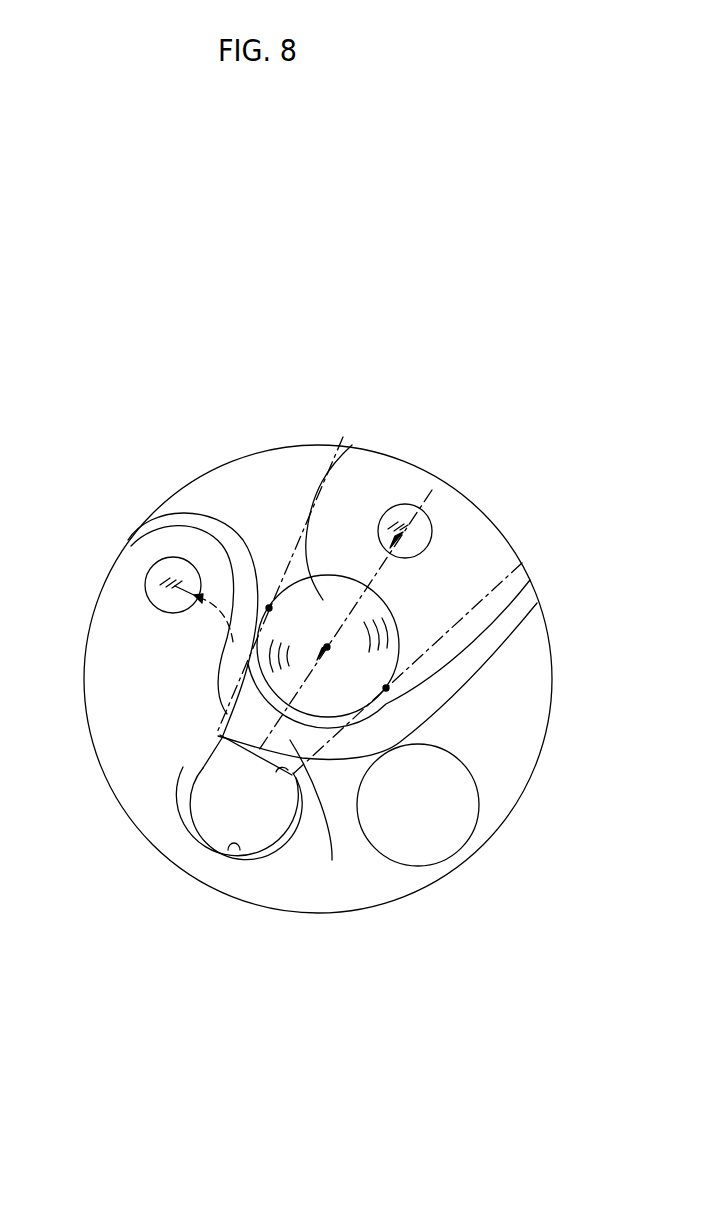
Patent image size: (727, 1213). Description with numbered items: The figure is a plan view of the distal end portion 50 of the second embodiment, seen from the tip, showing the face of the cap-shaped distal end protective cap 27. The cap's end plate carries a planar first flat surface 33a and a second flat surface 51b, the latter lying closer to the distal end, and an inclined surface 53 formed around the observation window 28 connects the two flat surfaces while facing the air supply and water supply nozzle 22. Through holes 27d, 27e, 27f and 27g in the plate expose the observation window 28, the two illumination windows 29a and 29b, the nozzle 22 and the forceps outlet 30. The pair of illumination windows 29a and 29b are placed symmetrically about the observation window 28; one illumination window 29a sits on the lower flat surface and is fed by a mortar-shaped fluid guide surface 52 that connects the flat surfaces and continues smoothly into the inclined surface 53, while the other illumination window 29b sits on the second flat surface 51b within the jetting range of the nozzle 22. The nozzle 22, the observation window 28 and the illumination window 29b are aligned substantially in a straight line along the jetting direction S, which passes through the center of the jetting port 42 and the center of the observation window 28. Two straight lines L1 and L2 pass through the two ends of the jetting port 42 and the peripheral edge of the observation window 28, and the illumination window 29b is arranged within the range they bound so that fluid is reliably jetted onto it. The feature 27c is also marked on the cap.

The distal end portion 50 is at (492, 350).
The distal end protective cap 27 is at (203, 888).
The fluid guide surface 52 is at (210, 528).
The second flat surface 51b is at (257, 473).
The wall surface 27c is at (352, 445).
The observation window 28 is at (345, 440).
The illumination window 29b is at (423, 515).
The illumination window 29a is at (147, 591).
The through hole 27e is at (201, 621).
The jetting direction S is at (382, 568).
The through hole 27f is at (411, 551).
The straight line L1 is at (281, 567).
The straight line L2 is at (461, 620).
The through hole 27d is at (386, 686).
The air supply and water supply nozzle 22 is at (221, 790).
The jetting port 42 is at (294, 777).
The first flat surface 33a is at (155, 788).
The through hole 27g is at (234, 852).
The inclined surface 53 is at (332, 860).
The forceps outlet 30 is at (404, 840).